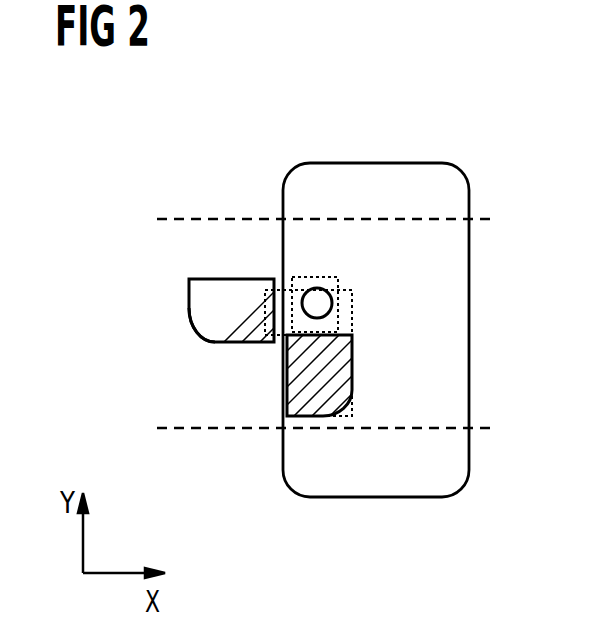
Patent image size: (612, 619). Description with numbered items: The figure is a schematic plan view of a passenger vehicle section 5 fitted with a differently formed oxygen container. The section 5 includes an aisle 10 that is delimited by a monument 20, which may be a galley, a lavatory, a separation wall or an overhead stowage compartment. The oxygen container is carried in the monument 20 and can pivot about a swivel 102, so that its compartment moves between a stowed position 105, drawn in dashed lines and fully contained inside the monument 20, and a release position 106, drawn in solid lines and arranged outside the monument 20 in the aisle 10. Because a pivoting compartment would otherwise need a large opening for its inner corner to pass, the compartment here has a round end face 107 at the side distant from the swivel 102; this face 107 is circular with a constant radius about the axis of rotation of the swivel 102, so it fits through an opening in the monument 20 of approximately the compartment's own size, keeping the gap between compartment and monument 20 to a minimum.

The passenger vehicle section 5 is at (472, 123).
The aisle 10 is at (229, 476).
The monument 20 is at (412, 486).
The swivel 102 is at (316, 300).
The stowed position 105 is at (319, 395).
The release position 106 is at (232, 292).
The round end face 107 is at (190, 322).